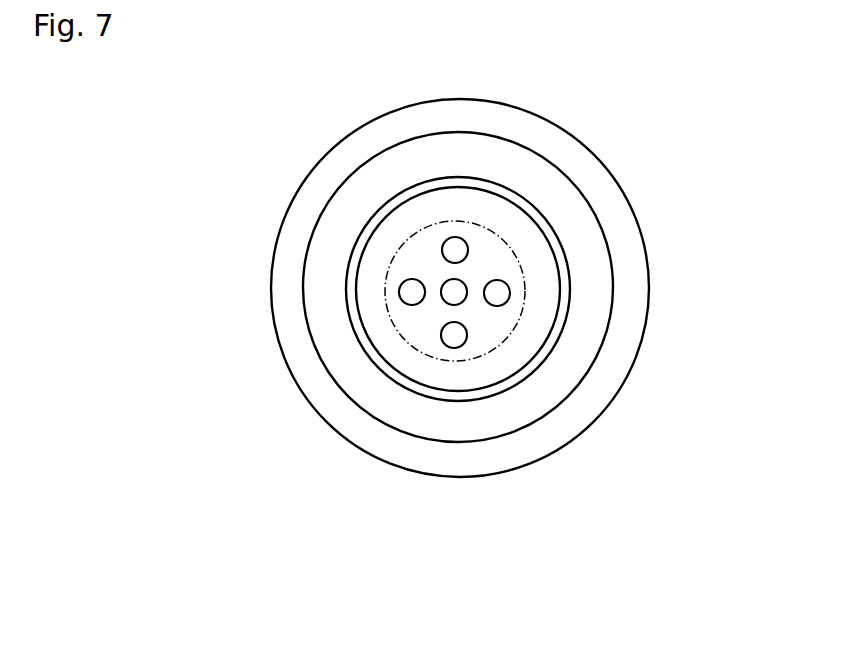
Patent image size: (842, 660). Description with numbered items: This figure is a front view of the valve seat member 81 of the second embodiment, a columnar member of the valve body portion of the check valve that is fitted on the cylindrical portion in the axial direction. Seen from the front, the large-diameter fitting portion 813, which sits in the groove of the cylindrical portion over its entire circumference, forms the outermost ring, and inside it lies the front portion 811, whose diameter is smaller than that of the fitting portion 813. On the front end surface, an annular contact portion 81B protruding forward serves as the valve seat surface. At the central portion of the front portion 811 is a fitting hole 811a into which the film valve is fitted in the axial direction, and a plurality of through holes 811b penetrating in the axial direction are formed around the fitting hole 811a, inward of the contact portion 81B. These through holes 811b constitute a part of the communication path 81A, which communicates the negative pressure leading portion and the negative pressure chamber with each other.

The valve seat member 81 is at (297, 177).
The front portion 811 is at (322, 302).
The fitting portion 813 is at (292, 348).
The communication path 81A is at (376, 363).
The contact portion 81B is at (475, 400).
The fitting hole 811a is at (468, 284).
The through holes 811b is at (457, 237).